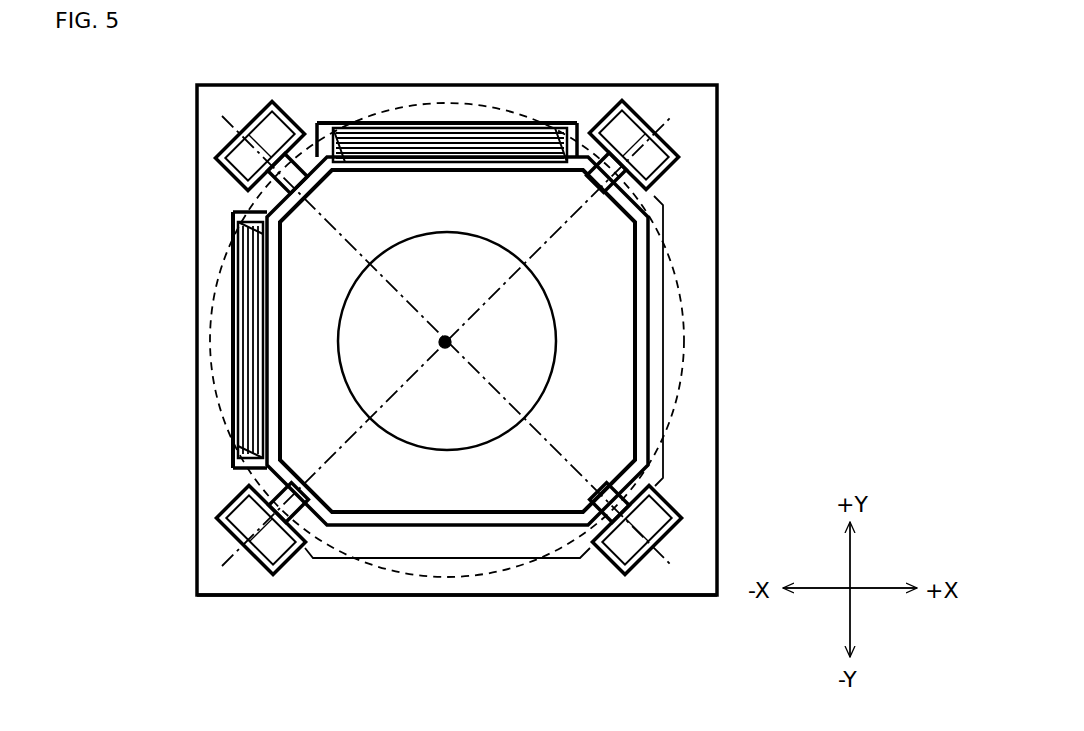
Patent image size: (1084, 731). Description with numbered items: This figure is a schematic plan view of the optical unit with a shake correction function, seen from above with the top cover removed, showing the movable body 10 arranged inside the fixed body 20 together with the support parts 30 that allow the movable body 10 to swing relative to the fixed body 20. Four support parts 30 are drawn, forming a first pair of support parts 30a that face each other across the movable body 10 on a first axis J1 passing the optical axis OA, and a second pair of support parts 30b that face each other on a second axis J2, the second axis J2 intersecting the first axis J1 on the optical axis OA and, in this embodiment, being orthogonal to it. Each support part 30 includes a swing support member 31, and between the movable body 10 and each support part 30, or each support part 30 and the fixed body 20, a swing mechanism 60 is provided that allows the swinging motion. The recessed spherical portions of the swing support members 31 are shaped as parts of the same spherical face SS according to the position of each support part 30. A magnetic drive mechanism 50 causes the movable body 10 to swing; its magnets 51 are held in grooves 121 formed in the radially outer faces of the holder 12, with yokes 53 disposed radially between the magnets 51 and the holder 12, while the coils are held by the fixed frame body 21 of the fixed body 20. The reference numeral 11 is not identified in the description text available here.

The movable body 10 is at (561, 357).
The inner frame portion 11 is at (620, 346).
The holder 12 is at (650, 382).
The fixed body 20 is at (188, 594).
The fixed frame body 21 is at (405, 597).
The support part 30 is at (463, 379).
The first pair of support parts 30a is at (222, 520).
The second pair of support parts 30b is at (222, 150).
The swing support member 31 is at (246, 182).
The drive mechanism 50 is at (349, 252).
The magnet 51 is at (412, 136).
The yoke 53 is at (463, 142).
The swing mechanism 60 is at (304, 164).
The groove 121 is at (344, 118).
The spherical face SS is at (673, 262).
The optical axis OA is at (452, 342).
The first axis J1 is at (572, 213).
The second axis J2 is at (332, 223).